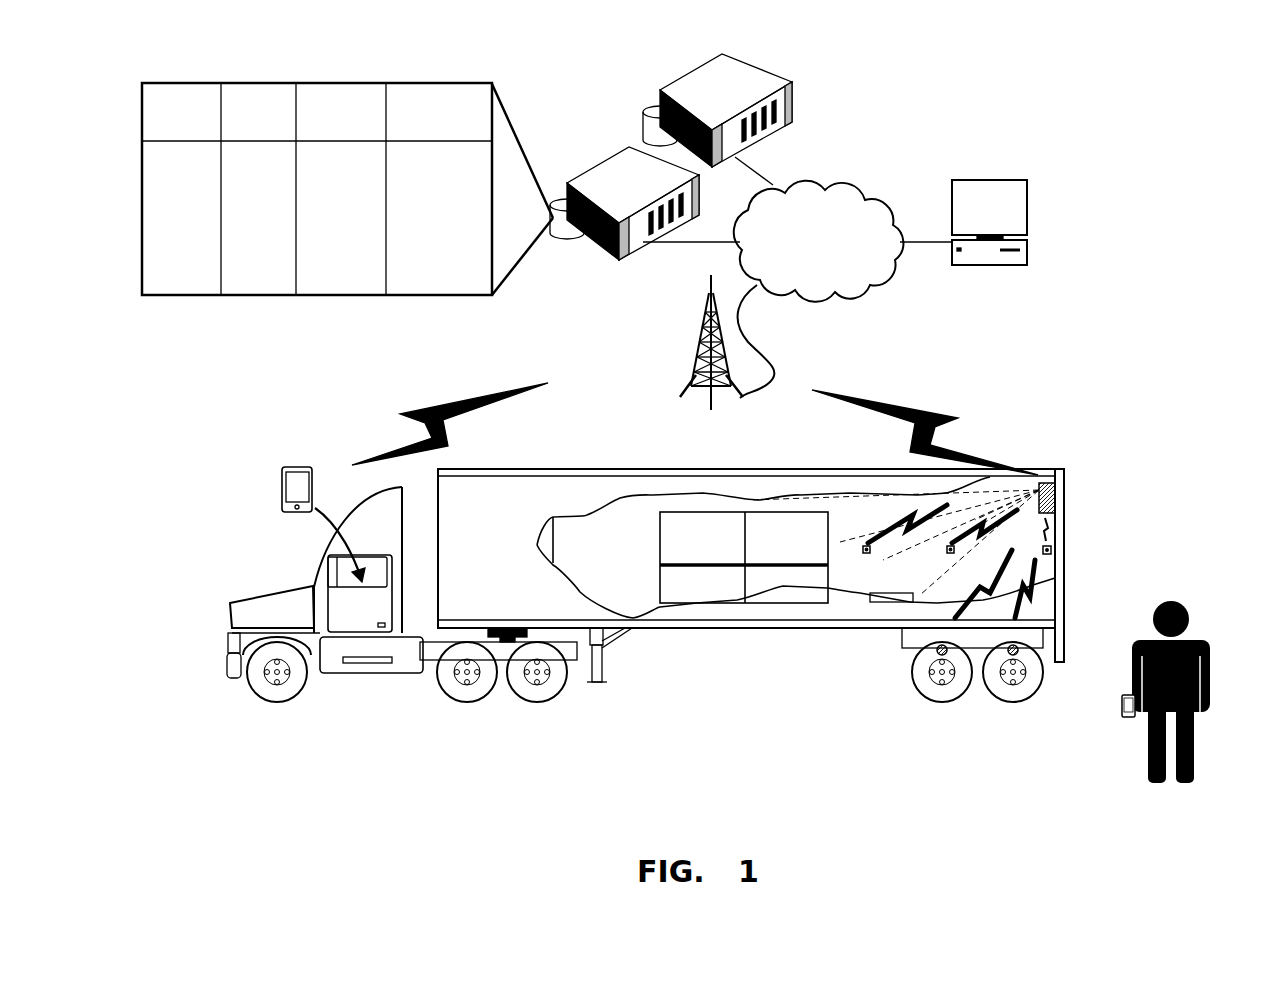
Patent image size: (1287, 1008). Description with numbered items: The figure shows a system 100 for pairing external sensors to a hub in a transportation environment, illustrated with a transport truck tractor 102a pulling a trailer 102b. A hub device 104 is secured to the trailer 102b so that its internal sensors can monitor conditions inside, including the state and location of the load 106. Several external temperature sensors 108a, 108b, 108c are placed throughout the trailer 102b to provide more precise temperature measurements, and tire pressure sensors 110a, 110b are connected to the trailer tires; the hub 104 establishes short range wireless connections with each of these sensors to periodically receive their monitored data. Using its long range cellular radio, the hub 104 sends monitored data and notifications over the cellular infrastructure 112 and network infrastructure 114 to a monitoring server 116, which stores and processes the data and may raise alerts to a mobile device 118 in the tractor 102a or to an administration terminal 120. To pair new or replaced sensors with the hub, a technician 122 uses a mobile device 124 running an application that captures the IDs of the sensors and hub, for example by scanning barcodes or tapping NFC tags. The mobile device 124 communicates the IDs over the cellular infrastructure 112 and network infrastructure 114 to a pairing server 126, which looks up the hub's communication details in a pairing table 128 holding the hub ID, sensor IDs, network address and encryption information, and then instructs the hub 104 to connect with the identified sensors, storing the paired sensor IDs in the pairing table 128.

The system 100 is at (921, 78).
The tractor 102a is at (282, 592).
The trailer 102b is at (580, 469).
The hub device 104 is at (1055, 502).
The load 106 is at (771, 547).
The external temperature sensor 108a is at (866, 553).
The external temperature sensor 108b is at (950, 553).
The external temperature sensor 108c is at (1055, 551).
The tire pressure sensor 110a is at (937, 655).
The tire pressure sensor 110b is at (1020, 658).
The cellular infrastructure 112 is at (690, 362).
The network infrastructure 114 is at (794, 275).
The monitoring server 116 is at (696, 100).
The mobile device 118 is at (300, 467).
The administration terminal 120 is at (973, 215).
The technician 122 is at (1155, 783).
The mobile device 124 is at (1130, 718).
The pairing server 126 is at (603, 193).
The pairing table 128 is at (205, 83).